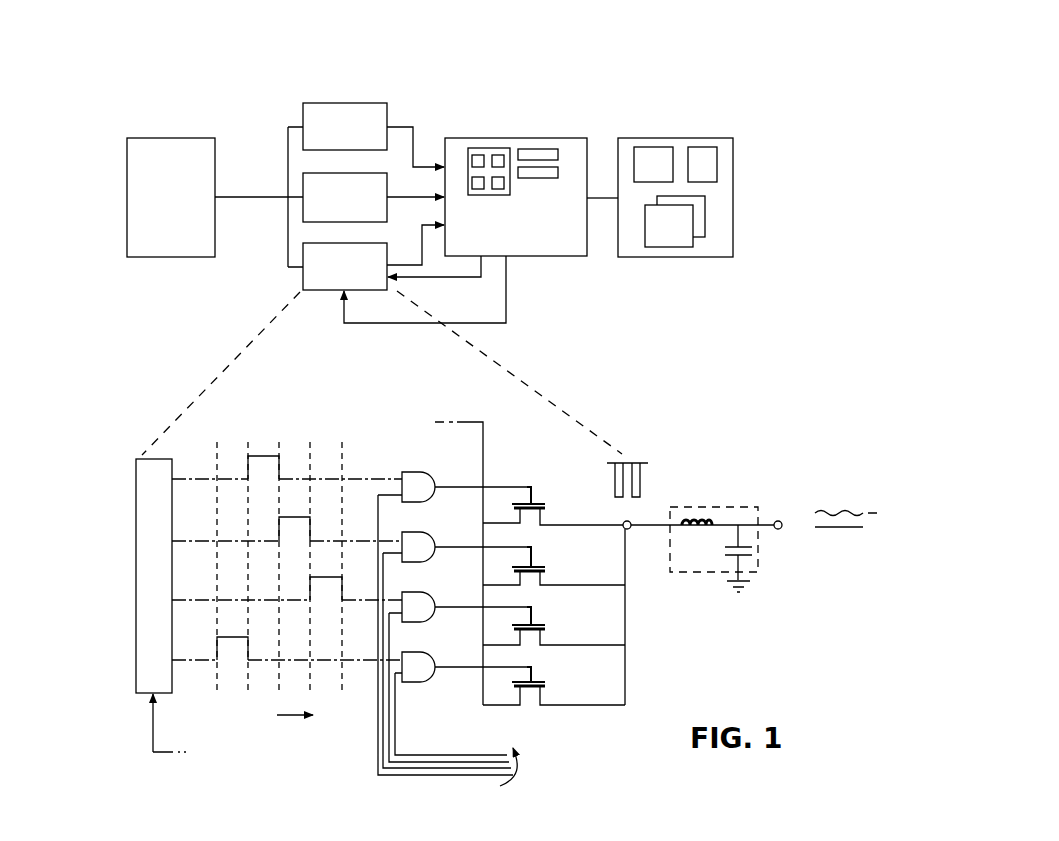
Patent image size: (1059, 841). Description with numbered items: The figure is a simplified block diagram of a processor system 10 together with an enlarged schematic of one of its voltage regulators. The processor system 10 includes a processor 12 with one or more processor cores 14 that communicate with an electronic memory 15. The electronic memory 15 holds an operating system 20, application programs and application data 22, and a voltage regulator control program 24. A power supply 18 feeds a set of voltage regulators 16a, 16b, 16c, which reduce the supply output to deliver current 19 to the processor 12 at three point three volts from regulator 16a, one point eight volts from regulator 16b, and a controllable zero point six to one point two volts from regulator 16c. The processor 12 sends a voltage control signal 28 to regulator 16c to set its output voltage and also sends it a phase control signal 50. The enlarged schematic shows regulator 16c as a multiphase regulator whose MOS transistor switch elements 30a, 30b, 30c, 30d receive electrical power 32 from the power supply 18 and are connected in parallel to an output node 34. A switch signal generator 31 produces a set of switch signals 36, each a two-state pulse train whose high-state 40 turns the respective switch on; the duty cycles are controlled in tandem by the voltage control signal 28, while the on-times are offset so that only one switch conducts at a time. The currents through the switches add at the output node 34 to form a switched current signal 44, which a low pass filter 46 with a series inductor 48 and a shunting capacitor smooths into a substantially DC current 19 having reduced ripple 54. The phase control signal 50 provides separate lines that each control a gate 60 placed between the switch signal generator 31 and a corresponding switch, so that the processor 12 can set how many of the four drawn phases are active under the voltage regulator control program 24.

The processor system 10 is at (689, 41).
The processor 12 is at (523, 138).
The processor cores 14 is at (472, 182).
The electronic memory 15 is at (712, 138).
The voltage regulator 16a is at (311, 108).
The voltage regulator 16b is at (292, 187).
The voltage regulator 16c is at (301, 273).
The power supply 18 is at (171, 197).
The current 19 is at (405, 264).
The operating system 20 is at (653, 147).
The application programs and application data 22 is at (695, 222).
The voltage regulator control program 24 is at (710, 163).
The voltage control signal 28 is at (470, 278).
The switch element 30a is at (543, 514).
The switch element 30b is at (543, 575).
The switch element 30c is at (543, 637).
The switch element 30d is at (543, 697).
The switch signal generator 31 is at (136, 583).
The electrical power 32 is at (245, 198).
The output node 34 is at (629, 530).
The switch signals 36 is at (267, 418).
The high-state 40 is at (273, 456).
The switched current signal 44 is at (640, 463).
The low pass filter 46 is at (736, 475).
The series inductor 48 is at (700, 531).
The phase control signal 50 is at (495, 323).
The ripple 54 is at (878, 513).
The gate 60 is at (433, 525).